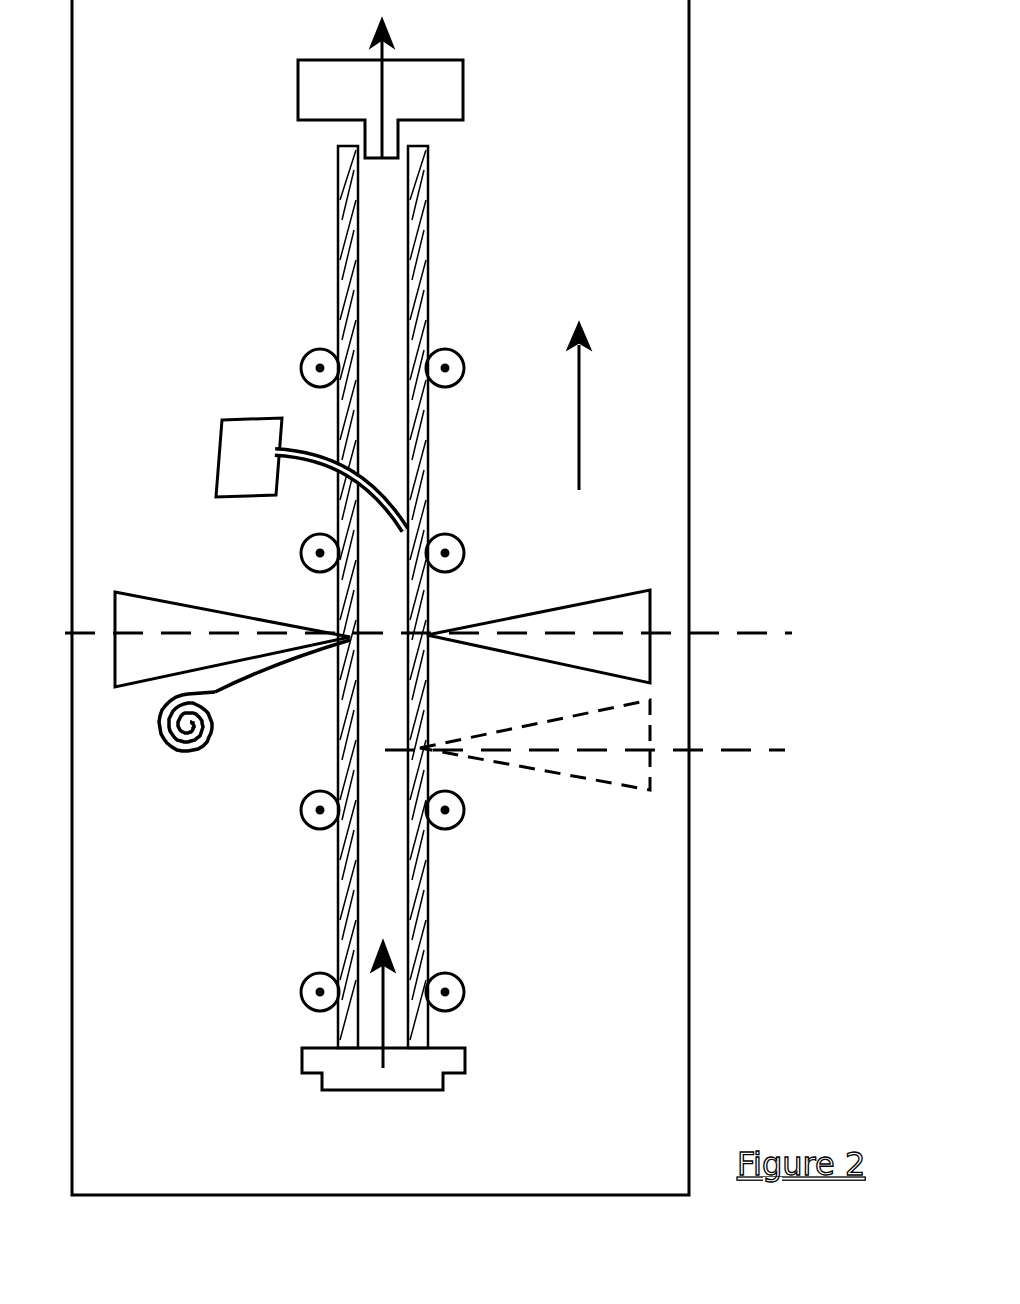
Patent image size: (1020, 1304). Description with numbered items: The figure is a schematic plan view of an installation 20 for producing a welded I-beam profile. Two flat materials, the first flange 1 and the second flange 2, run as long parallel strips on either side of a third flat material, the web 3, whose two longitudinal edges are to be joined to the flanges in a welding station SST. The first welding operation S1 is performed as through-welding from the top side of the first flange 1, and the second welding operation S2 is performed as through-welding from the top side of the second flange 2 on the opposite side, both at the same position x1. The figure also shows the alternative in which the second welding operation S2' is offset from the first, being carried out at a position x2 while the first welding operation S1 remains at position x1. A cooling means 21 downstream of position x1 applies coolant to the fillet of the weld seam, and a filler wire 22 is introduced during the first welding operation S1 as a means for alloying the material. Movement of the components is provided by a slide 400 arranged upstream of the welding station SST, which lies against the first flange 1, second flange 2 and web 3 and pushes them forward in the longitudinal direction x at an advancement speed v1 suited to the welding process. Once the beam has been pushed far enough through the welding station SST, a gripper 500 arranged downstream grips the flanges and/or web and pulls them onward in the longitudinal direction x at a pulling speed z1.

The first flange 1 is at (338, 287).
The second flange 2 is at (428, 293).
The web 3 is at (408, 354).
The installation 20 is at (689, 228).
The cooling means 21 is at (220, 440).
The filler wire 22 is at (173, 753).
The slide 400 is at (445, 1087).
The gripper 500 is at (463, 80).
The first welding operation S1 is at (168, 600).
The second welding operation S2 is at (541, 606).
The offset second welding operation S2' is at (535, 776).
The position X1 x1 is at (462, 636).
The position X2 x2 is at (619, 756).
The longitudinal direction x is at (579, 385).
The pulling speed z1 is at (392, 32).
The advancement speed v1 is at (385, 1023).
The welding station SST is at (263, 845).